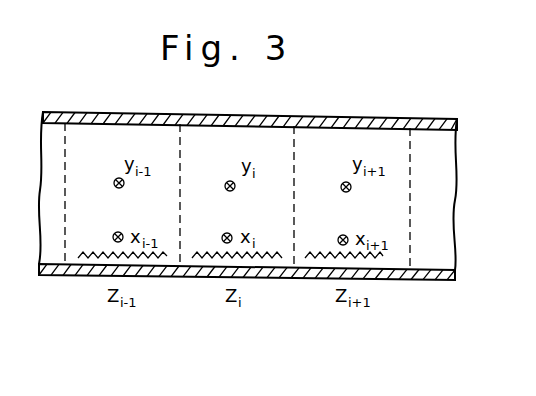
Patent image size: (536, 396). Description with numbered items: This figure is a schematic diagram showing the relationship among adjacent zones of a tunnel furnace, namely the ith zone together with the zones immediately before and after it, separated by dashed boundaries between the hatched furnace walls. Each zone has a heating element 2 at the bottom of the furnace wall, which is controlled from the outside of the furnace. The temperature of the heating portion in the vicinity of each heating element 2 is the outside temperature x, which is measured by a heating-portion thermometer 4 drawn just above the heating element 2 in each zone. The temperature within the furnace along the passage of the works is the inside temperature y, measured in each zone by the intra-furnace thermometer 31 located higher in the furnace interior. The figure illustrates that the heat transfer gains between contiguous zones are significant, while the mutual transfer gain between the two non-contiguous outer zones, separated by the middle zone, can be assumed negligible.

The heating element 2 is at (95, 265).
The heating-portion thermometer 4 is at (114, 233).
The intra-furnace thermometer 31 is at (226, 181).